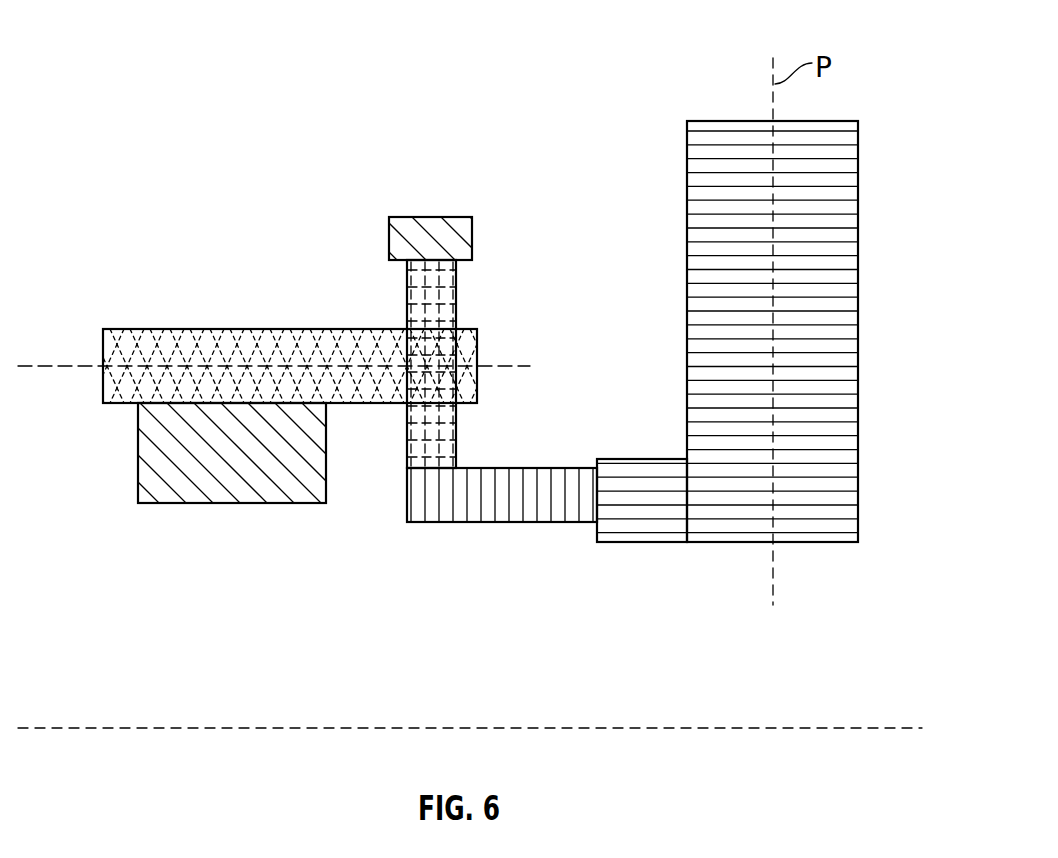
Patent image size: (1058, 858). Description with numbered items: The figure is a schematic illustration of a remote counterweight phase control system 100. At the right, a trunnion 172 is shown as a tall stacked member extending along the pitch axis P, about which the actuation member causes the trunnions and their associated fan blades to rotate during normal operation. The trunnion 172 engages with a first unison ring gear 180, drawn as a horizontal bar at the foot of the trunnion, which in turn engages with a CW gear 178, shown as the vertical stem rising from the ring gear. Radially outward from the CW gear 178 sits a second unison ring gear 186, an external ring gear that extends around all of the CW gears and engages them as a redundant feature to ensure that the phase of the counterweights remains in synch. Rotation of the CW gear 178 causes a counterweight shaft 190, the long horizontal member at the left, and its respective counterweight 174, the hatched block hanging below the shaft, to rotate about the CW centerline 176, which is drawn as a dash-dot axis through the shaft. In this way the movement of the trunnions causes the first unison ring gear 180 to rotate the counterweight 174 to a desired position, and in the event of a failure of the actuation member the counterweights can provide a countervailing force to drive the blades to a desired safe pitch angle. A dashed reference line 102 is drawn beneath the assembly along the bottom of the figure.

The remote counterweight phase control system 100 is at (141, 52).
The mounting surface / reference plane 102 is at (843, 727).
The trunnion 172 is at (848, 468).
The counterweight 174 is at (150, 456).
The CW centerline 176 is at (62, 362).
The CW gear 178 is at (415, 299).
The first unison ring gear 180 is at (445, 518).
The second unison ring gear 186 is at (462, 235).
The counterweight shaft 190 is at (178, 330).